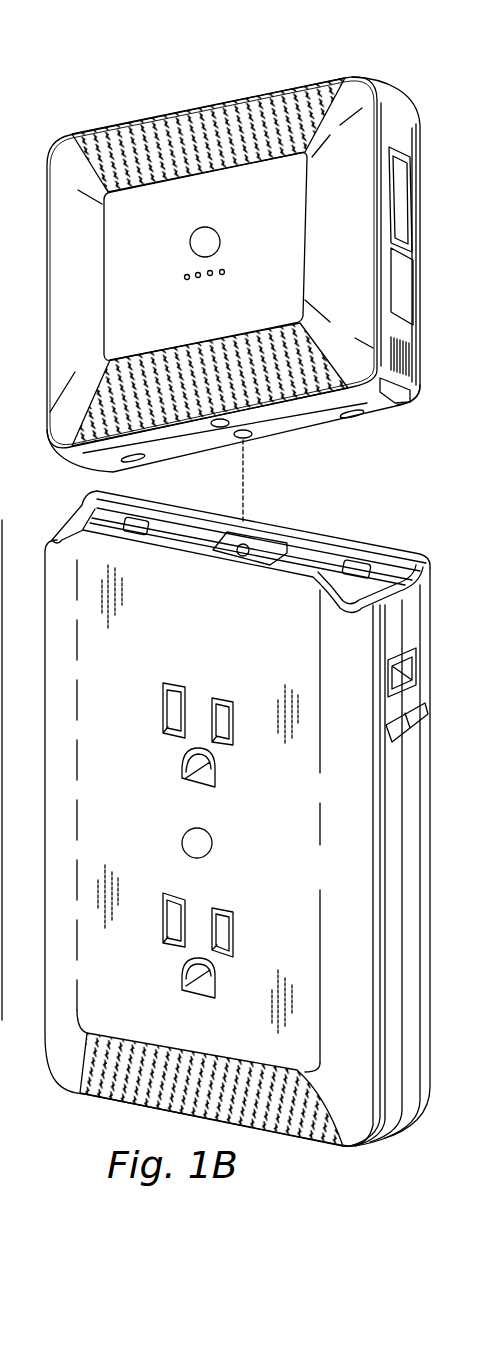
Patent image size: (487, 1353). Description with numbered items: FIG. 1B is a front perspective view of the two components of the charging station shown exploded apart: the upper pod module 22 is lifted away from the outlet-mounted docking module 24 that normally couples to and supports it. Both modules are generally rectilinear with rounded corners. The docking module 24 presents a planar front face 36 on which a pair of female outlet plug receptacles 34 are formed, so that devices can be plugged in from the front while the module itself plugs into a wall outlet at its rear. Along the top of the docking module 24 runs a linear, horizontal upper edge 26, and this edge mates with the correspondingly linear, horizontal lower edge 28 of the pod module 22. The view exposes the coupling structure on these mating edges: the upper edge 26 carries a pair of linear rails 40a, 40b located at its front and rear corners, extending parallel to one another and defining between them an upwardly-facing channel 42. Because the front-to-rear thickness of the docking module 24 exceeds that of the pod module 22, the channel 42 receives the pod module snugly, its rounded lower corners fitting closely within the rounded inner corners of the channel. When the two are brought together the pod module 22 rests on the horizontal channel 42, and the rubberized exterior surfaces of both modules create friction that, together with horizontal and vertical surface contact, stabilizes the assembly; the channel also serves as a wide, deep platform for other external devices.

The pod module 22 is at (124, 125).
The docking module 24 is at (292, 1145).
The upper edge 26 is at (310, 407).
The lower edge 28 is at (384, 581).
The female outlet plug receptacles 34 is at (154, 728).
The front face 36 is at (275, 840).
The linear rail 40a is at (83, 527).
The linear rail 40b is at (167, 503).
The channel 42 is at (304, 563).